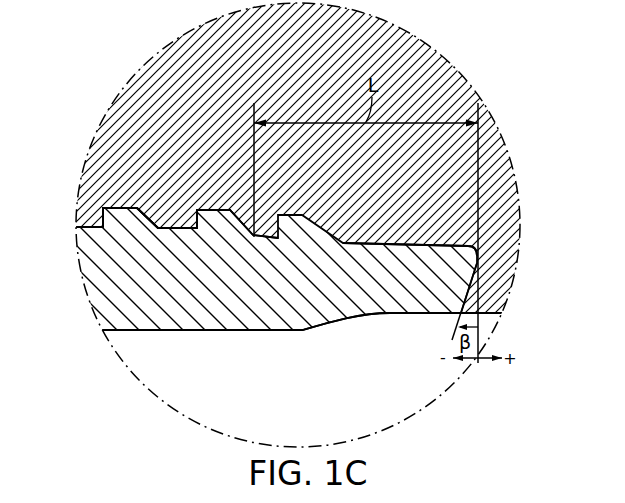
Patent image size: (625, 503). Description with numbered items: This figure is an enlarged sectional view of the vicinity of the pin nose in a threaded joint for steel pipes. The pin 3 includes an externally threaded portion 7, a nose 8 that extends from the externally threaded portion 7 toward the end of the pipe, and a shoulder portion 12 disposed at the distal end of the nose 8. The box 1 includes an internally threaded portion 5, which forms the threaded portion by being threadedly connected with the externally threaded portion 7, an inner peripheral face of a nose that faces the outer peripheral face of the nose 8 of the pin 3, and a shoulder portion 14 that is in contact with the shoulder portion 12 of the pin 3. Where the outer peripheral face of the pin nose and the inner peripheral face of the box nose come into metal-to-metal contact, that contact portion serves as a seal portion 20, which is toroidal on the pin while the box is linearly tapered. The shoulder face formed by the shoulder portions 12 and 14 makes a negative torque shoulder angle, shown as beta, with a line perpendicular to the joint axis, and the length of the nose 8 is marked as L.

The box 1 is at (100, 185).
The pin 3 is at (115, 288).
The internally threaded portion 5 is at (173, 217).
The externally threaded portion 7 is at (118, 225).
The nose 8 is at (400, 293).
The shoulder portion 12 is at (460, 303).
The shoulder portion 14 is at (477, 277).
The seal portion 20 is at (402, 236).